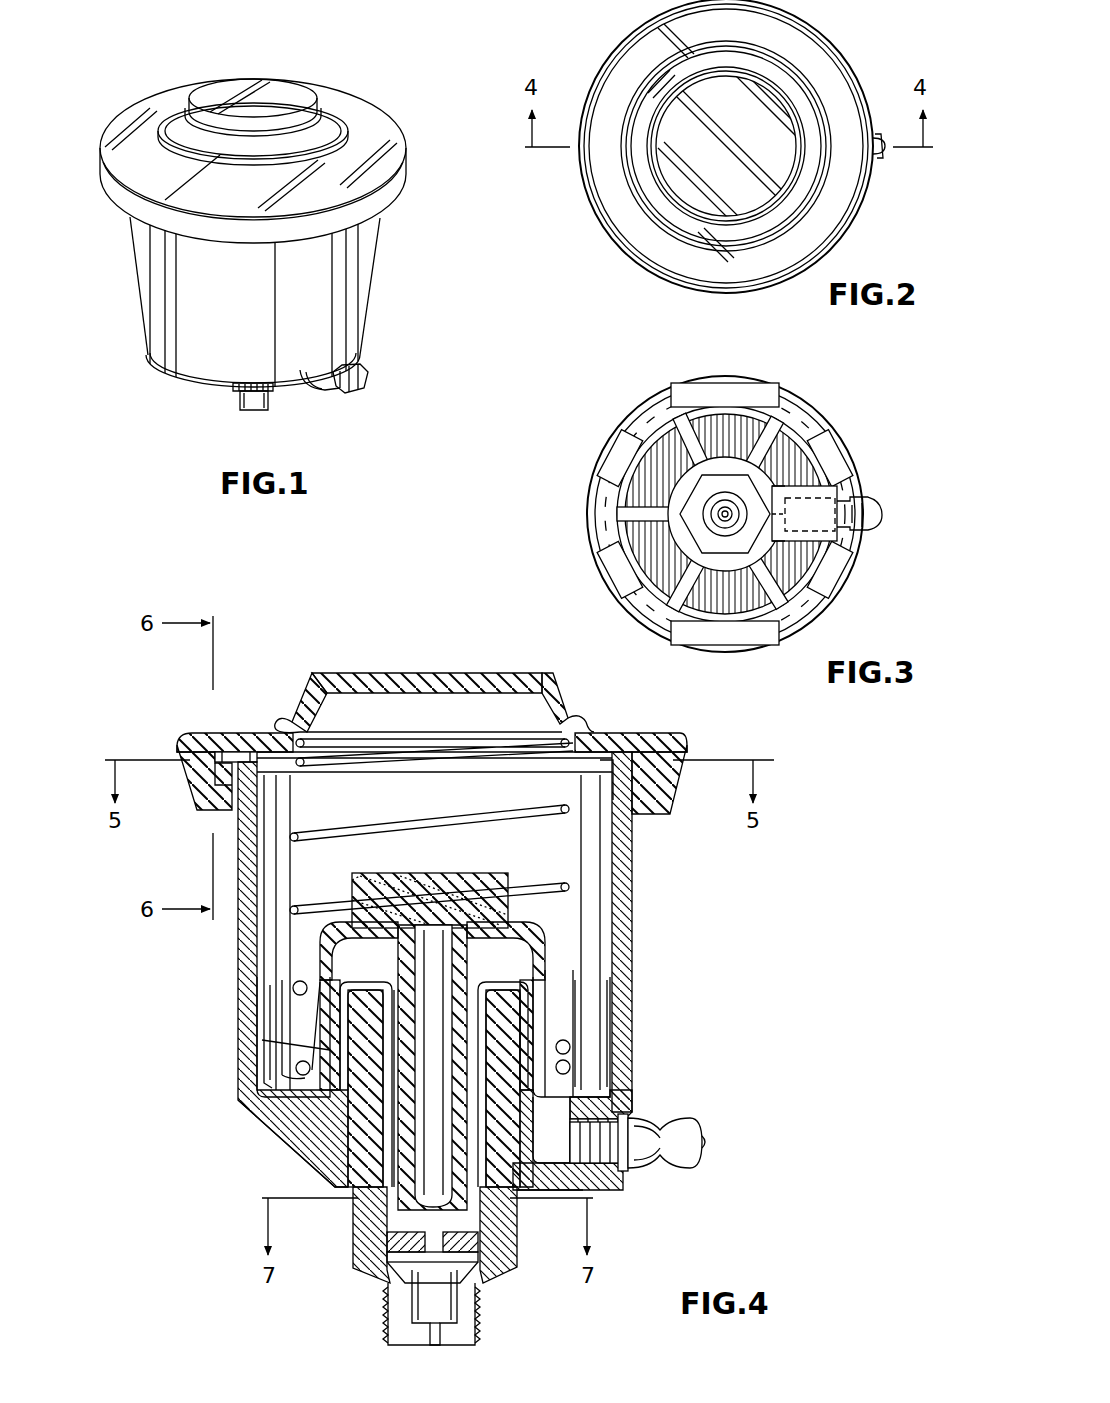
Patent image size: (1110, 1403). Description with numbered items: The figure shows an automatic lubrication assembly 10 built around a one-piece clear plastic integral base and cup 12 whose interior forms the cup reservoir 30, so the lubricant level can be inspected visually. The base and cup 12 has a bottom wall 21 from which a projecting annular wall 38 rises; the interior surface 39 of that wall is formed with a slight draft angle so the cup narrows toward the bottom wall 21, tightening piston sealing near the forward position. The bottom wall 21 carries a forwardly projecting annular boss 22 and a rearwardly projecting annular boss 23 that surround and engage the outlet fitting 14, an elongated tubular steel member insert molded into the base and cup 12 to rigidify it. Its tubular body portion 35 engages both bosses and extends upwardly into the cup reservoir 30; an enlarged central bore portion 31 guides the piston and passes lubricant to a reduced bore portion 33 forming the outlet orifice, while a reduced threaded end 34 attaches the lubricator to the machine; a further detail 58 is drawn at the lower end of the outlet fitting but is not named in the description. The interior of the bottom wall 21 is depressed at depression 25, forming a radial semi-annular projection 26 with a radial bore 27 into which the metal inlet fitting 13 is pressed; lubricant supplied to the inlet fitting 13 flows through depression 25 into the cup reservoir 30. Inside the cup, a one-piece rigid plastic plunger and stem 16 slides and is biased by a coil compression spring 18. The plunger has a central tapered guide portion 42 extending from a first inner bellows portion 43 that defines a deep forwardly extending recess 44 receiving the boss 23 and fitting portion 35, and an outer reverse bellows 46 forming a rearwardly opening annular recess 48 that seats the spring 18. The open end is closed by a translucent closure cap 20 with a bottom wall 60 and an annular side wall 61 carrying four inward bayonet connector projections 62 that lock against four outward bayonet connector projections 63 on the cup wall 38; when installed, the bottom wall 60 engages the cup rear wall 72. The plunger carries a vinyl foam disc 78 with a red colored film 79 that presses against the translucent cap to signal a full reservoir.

In FIG. 1, the automatic lubrication assembly 10 is at (280, 235).
In FIG. 1, the integral base and cup 12 is at (140, 315).
In FIG. 4, the integral base and cup 12 is at (640, 953).
In FIG. 1, the inlet fitting 13 is at (360, 390).
In FIG. 2, the inlet fitting 13 is at (883, 158).
In FIG. 3, the inlet fitting 13 is at (880, 528).
In FIG. 4, the inlet fitting 13 is at (685, 1125).
In FIG. 1, the outlet fitting 14 is at (233, 388).
In FIG. 3, the outlet fitting 14 is at (724, 498).
In FIG. 4, the outlet fitting 14 is at (520, 1245).
In FIG. 4, the plunger and stem 16 is at (318, 950).
In FIG. 4, the coil compression spring 18 is at (345, 745).
In FIG. 1, the closure cap 20 is at (288, 76).
In FIG. 2, the closure cap 20 is at (849, 49).
In FIG. 4, the closure cap 20 is at (365, 668).
In FIG. 3, the bottom wall 21 is at (665, 462).
In FIG. 4, the bottom wall 21 is at (300, 1112).
In FIG. 3, the forwardly projecting annular boss 22 is at (670, 485).
In FIG. 4, the forwardly projecting annular boss 22 is at (330, 1152).
In FIG. 4, the rearwardly projecting annular boss 23 is at (345, 1042).
In FIG. 4, the depression 25 is at (538, 1100).
In FIG. 1, the radial semi-annular projection 26 is at (312, 380).
In FIG. 3, the radial semi-annular projection 26 is at (812, 476).
In FIG. 4, the radial semi-annular projection 26 is at (567, 1178).
In FIG. 4, the radial bore 27 is at (592, 1172).
In FIG. 4, the cup reservoir 30 is at (600, 1050).
In FIG. 4, the enlarged central bore portion 31 is at (408, 1220).
In FIG. 3, the reduced bore portion 33 is at (715, 517).
In FIG. 4, the reduced bore portion 33 is at (432, 1346).
In FIG. 1, the reduced threaded end 34 is at (248, 408).
In FIG. 3, the reduced threaded end 34 is at (740, 503).
In FIG. 4, the reduced threaded end 34 is at (478, 1305).
In FIG. 4, the tubular body portion 35 is at (375, 1087).
In FIG. 1, the annular wall 38 is at (128, 268).
In FIG. 3, the annular wall 38 is at (737, 640).
In FIG. 4, the annular wall 38 is at (636, 842).
In FIG. 4, the interior surface 39 is at (264, 922).
In FIG. 4, the guide portion 42 is at (468, 1032).
In FIG. 4, the first inner bellows portion 43 is at (565, 935).
In FIG. 4, the forwardly extending recess 44 is at (320, 963).
In FIG. 4, the outer reverse bellows 46 is at (282, 1082).
In FIG. 4, the annular recess 48 is at (300, 1040).
In FIG. 4, the washer 58 is at (378, 1265).
In FIG. 1, the bottom wall 60 is at (360, 125).
In FIG. 2, the bottom wall 60 is at (650, 233).
In FIG. 4, the bottom wall 60 is at (254, 732).
In FIG. 4, the annular side wall 61 is at (192, 773).
In FIG. 3, the bayonet connector projections 62 is at (828, 424).
In FIG. 4, the bayonet connector projections 62 is at (222, 790).
In FIG. 3, the bayonet connector projections 63 is at (840, 392).
In FIG. 4, the bayonet connector projections 63 is at (224, 748).
In FIG. 4, the cup rear wall 72 is at (612, 770).
In FIG. 4, the vinyl foam disc 78 is at (472, 878).
In FIG. 4, the red colored film 79 is at (415, 872).